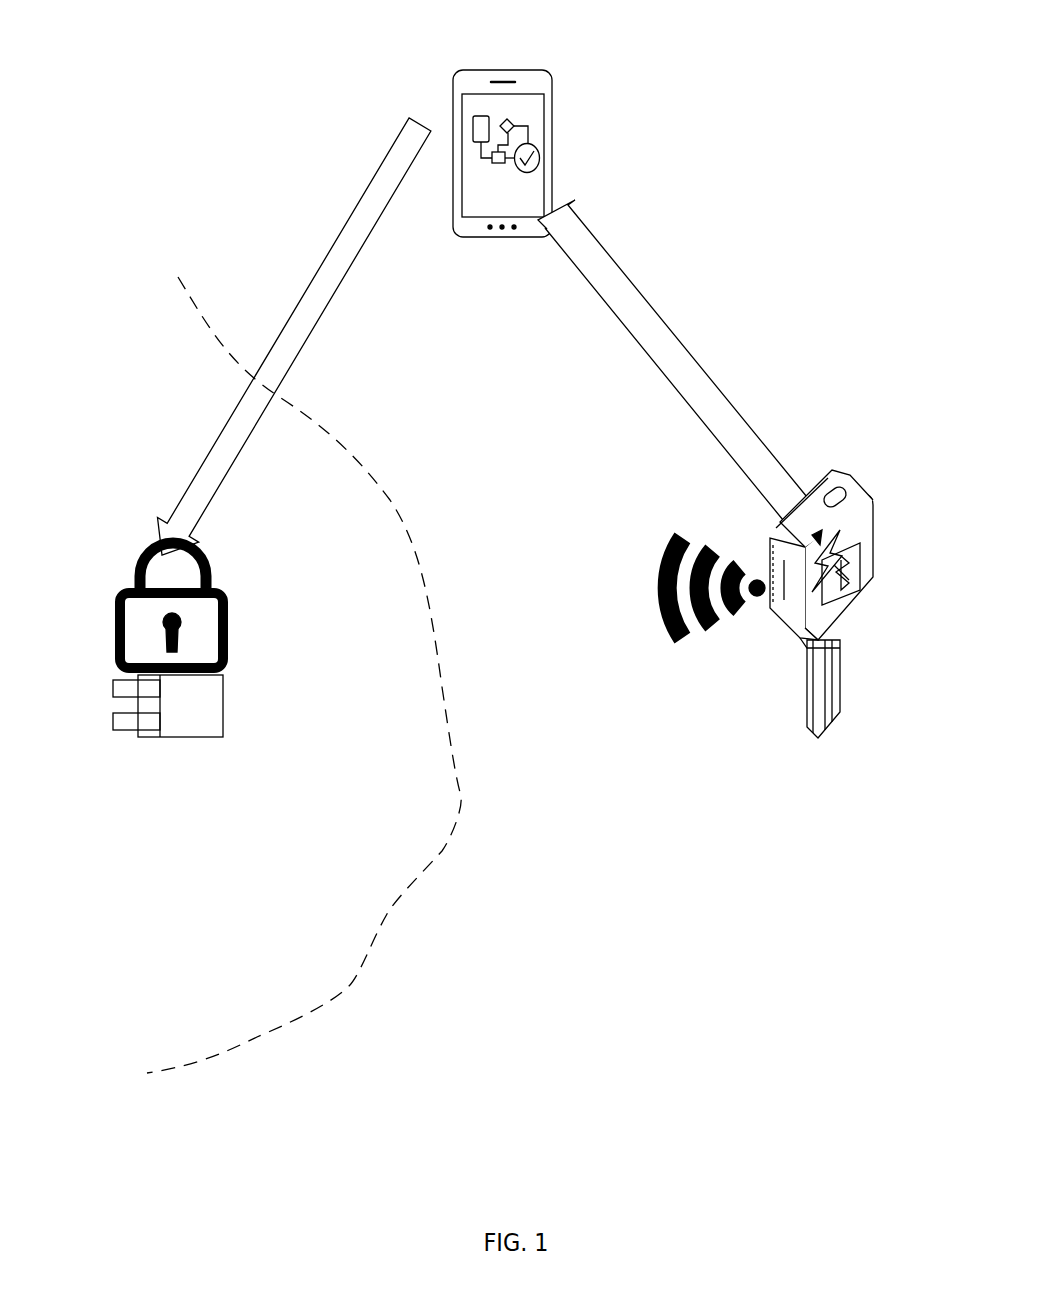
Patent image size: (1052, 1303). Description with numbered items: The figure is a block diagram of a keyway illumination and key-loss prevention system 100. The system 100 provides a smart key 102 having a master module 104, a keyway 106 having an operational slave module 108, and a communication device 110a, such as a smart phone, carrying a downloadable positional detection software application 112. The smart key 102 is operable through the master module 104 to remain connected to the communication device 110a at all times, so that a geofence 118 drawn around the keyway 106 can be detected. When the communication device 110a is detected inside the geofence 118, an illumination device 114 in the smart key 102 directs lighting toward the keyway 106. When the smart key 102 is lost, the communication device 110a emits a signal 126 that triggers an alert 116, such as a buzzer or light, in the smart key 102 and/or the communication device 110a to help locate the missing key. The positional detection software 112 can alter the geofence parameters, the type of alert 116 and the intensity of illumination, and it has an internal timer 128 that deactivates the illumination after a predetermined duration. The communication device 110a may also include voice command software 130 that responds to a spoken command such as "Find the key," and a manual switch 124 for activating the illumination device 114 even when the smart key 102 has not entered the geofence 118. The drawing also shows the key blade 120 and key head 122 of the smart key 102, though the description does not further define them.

The keyway illumination and key-loss prevention system 100 is at (104, 69).
The smart key 102 is at (904, 432).
The master module 104 is at (783, 555).
The keyway 106 is at (98, 509).
The operational slave module 108 is at (223, 738).
The communication device 110a is at (626, 89).
The positional detection software application 112 is at (490, 155).
The illumination device 114 is at (805, 643).
The alert 116 is at (833, 543).
The geofence 118 is at (461, 810).
The key blade 120 is at (835, 705).
The key head 122 is at (862, 530).
The manual switch 124 is at (486, 238).
The signal 126 is at (686, 636).
The internal timer 128 is at (529, 159).
The voice command software 130 is at (513, 127).